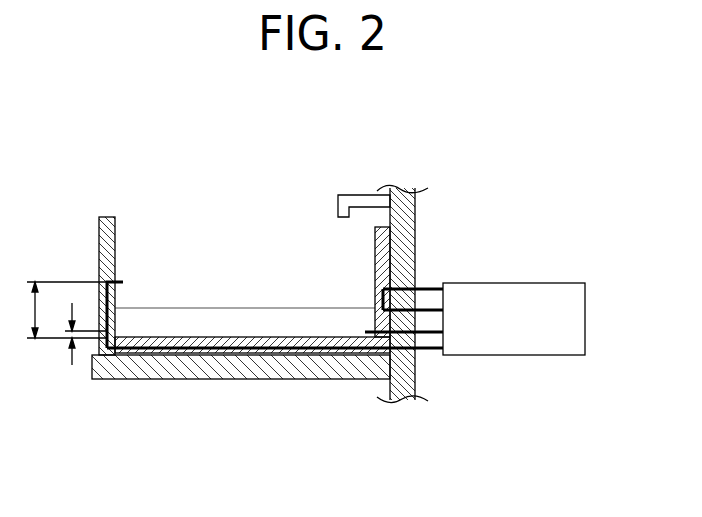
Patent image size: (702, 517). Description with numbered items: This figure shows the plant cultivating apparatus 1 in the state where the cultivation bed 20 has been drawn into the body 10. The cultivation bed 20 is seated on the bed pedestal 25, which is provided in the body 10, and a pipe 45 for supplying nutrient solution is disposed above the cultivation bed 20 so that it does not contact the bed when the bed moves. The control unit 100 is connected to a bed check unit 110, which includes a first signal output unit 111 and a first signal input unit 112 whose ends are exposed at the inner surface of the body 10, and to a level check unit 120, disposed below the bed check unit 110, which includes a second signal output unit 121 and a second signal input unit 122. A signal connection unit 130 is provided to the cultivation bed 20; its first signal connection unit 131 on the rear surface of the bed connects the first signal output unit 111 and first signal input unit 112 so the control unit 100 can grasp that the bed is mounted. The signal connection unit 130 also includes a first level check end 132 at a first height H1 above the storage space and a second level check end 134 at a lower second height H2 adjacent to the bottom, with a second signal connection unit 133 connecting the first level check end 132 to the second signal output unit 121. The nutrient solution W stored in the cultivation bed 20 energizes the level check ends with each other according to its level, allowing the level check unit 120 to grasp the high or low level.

The plant cultivating apparatus 1 is at (89, 84).
The body 10 is at (399, 190).
The cultivation bed 20 is at (100, 238).
The bed pedestal 25 is at (220, 379).
The pipe 45 is at (352, 195).
The control unit 100 is at (585, 316).
The bed check unit 110 is at (490, 220).
The first signal output unit 111 is at (440, 314).
The first signal input unit 112 is at (427, 288).
The level check unit 120 is at (455, 458).
The second signal output unit 121 is at (430, 350).
The second signal input unit 122 is at (398, 400).
The signal connection unit 130 is at (313, 208).
The first signal connection unit 131 is at (383, 300).
The first level check end 132 is at (123, 282).
The second signal connection unit 133 is at (207, 348).
The second level check end 134 is at (365, 332).
The first height H1 is at (58, 310).
The second height H2 is at (75, 334).
The nutrient solution W is at (167, 324).